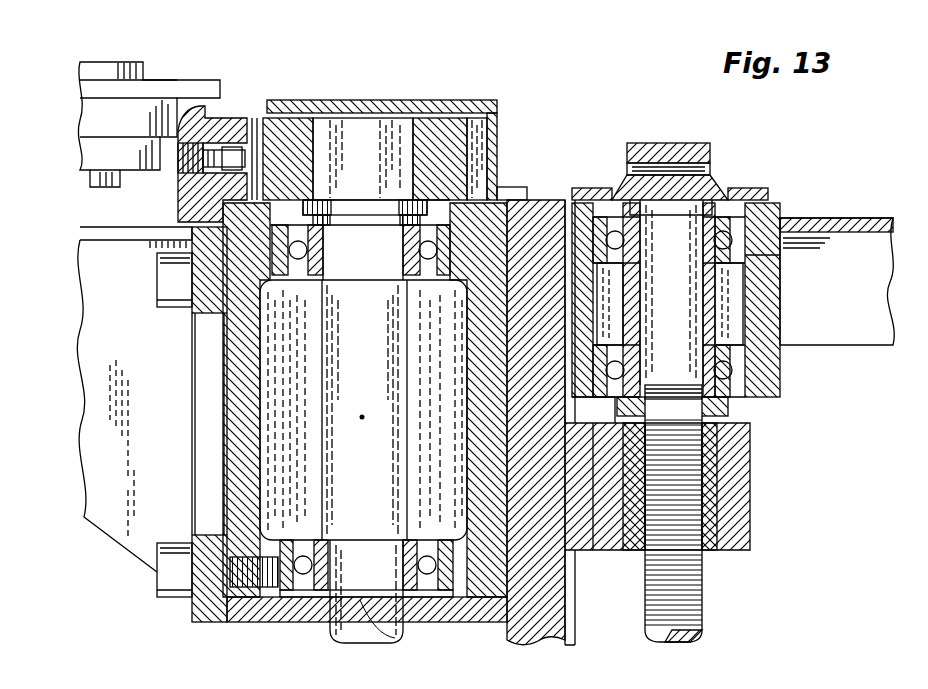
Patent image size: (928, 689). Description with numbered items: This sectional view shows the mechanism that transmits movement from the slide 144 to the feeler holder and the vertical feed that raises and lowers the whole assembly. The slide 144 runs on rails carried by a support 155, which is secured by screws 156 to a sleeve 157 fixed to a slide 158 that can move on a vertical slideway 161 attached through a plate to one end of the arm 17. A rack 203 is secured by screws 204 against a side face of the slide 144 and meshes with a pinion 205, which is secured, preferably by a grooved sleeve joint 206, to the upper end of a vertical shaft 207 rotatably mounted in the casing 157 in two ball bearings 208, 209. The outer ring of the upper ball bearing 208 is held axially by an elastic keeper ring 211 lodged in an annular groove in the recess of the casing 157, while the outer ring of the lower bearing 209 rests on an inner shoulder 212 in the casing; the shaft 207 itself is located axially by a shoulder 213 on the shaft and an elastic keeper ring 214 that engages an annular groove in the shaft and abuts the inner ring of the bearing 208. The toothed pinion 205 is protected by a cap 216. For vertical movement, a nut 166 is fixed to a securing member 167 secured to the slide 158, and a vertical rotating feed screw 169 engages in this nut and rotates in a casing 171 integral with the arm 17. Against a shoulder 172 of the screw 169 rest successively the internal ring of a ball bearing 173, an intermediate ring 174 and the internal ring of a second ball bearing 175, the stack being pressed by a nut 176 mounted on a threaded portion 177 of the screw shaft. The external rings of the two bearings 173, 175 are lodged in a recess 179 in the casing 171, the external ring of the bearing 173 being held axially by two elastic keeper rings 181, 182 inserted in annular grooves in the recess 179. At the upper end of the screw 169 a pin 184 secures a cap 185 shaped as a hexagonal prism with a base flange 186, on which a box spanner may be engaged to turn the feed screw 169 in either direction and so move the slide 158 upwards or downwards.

The arm 17 is at (877, 226).
The slide 144 is at (157, 92).
The support 155 is at (84, 440).
The screws 156 is at (160, 283).
The sleeve 157 is at (268, 618).
The slide 158 is at (555, 618).
The vertical slideway 161 is at (567, 575).
The nut 166 is at (708, 548).
The securing member 167 is at (745, 505).
The feed screw 169 is at (703, 593).
The casing 171 is at (780, 204).
The shoulder 172 is at (622, 244).
The ball bearing 173 is at (632, 256).
The intermediate ring 174 is at (638, 285).
The second ball bearing 175 is at (622, 370).
The nut 176 is at (728, 402).
The threaded portion 177 is at (664, 394).
The recess 179 is at (730, 318).
The elastic keeper ring 181 is at (760, 203).
The elastic keeper ring 182 is at (760, 256).
The pin 184 is at (717, 168).
The cap 185 is at (625, 150).
The base flange 186 is at (595, 188).
The rack 203 is at (227, 118).
The screws 204 is at (178, 157).
The pinion 205 is at (480, 130).
The grooved sleeve joint 206 is at (410, 118).
The vertical shaft 207 is at (364, 429).
The ball bearing 208 is at (300, 262).
The ball bearing 209 is at (305, 543).
The elastic keeper ring 211 is at (273, 225).
The inner shoulder 212 is at (457, 592).
The shoulder 213 is at (352, 227).
The elastic keeper ring 214 is at (424, 278).
The cap 216 is at (325, 100).